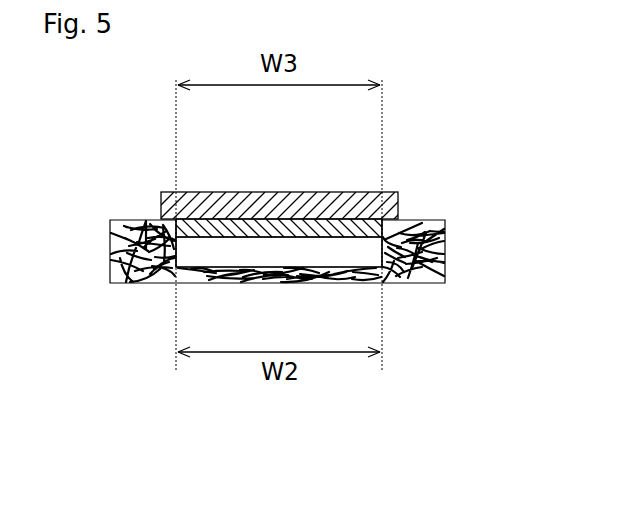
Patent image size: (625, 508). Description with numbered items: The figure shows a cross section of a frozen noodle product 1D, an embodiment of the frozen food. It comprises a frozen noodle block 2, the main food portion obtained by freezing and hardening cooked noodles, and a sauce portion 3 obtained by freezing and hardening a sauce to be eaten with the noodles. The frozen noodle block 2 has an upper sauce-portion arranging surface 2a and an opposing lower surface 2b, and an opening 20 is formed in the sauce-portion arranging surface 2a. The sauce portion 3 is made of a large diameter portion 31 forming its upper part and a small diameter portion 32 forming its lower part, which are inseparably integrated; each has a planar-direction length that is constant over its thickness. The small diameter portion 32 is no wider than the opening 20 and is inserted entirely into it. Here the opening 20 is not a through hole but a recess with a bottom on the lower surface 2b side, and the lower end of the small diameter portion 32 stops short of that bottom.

The frozen noodle product 1D is at (462, 168).
The frozen noodle block 2 is at (445, 262).
The sauce-portion arranging surface 2a is at (130, 220).
The lower surface 2b is at (258, 283).
The opening 20 is at (317, 250).
The sauce portion 3 is at (322, 137).
The large diameter portion 31 is at (252, 202).
The small diameter portion 32 is at (296, 232).